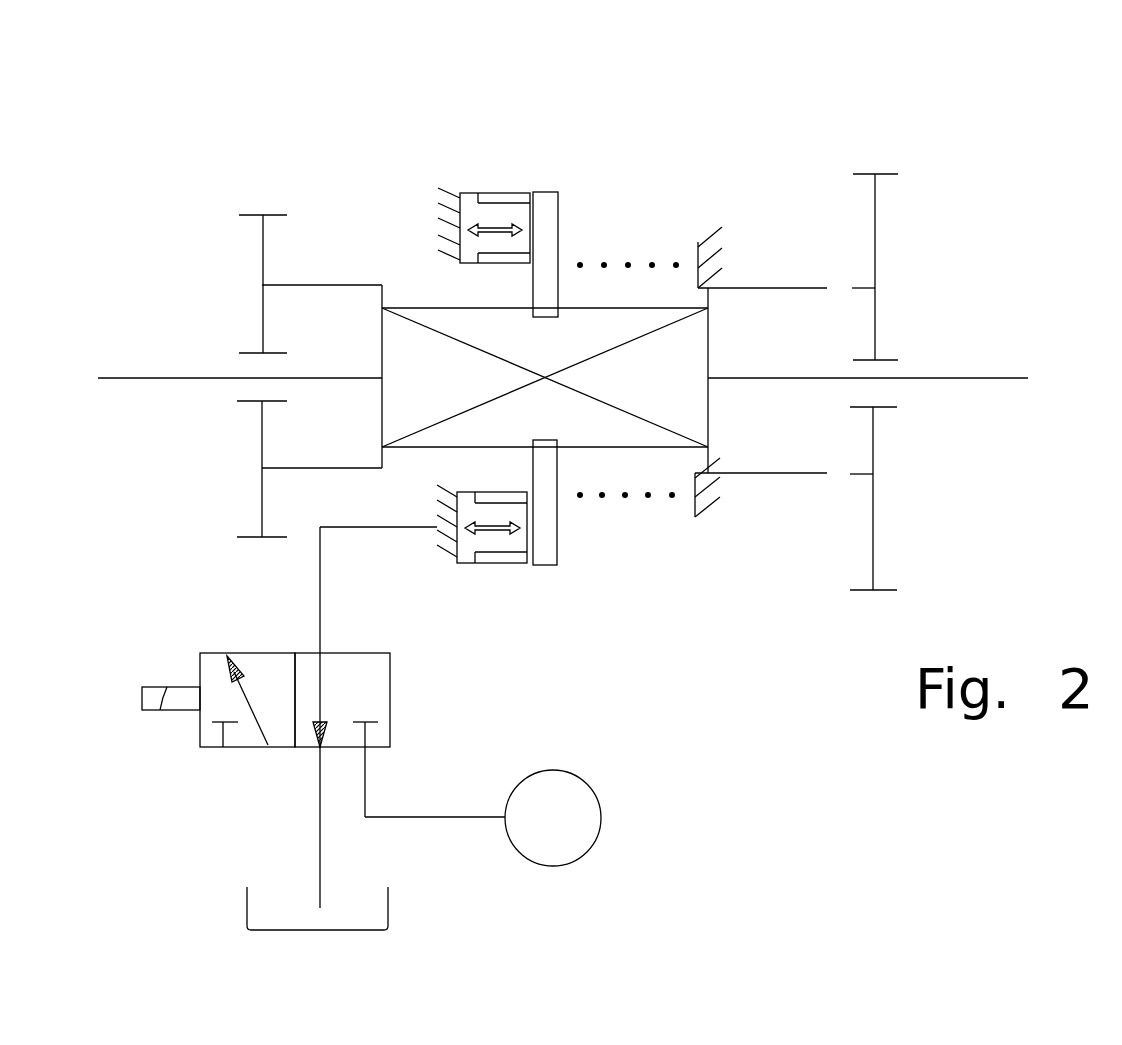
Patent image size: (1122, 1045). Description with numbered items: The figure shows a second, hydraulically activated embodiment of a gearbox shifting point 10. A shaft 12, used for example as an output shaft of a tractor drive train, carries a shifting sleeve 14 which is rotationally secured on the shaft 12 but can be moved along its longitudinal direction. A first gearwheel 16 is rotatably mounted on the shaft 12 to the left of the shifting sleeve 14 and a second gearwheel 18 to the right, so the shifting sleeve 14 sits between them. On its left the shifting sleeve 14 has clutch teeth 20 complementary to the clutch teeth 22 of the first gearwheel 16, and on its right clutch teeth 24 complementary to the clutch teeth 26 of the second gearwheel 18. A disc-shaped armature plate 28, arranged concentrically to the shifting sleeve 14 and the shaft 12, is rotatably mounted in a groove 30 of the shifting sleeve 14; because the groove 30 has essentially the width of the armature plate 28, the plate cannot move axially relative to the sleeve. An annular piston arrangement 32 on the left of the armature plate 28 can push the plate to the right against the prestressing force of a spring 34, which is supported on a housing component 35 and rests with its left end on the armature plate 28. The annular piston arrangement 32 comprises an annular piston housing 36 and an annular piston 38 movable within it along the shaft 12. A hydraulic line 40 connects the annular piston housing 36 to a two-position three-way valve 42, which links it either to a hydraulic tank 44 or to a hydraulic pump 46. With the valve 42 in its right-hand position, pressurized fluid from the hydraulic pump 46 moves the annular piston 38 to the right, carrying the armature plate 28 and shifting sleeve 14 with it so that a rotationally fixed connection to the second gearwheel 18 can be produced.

The gearbox shifting point 10 is at (737, 660).
The shaft 12 is at (987, 378).
The shifting sleeve 14 is at (590, 450).
The first gearwheel 16 is at (263, 253).
The second gearwheel 18 is at (875, 207).
The clutch teeth 20 is at (345, 468).
The clutch teeth 22 is at (263, 446).
The clutch teeth 24 is at (790, 474).
The clutch teeth 26 is at (863, 288).
The armature plate 28 is at (550, 209).
The groove 30 is at (547, 320).
The annular piston arrangement 32 is at (468, 192).
The spring 34 is at (643, 503).
The housing component 35 is at (697, 258).
The annular piston housing 36 is at (462, 563).
The annular piston 38 is at (487, 552).
The hydraulic line 40 is at (320, 612).
The 2-position 3-way valve 42 is at (418, 720).
The hydraulic tank 44 is at (247, 908).
The hydraulic pump 46 is at (600, 815).